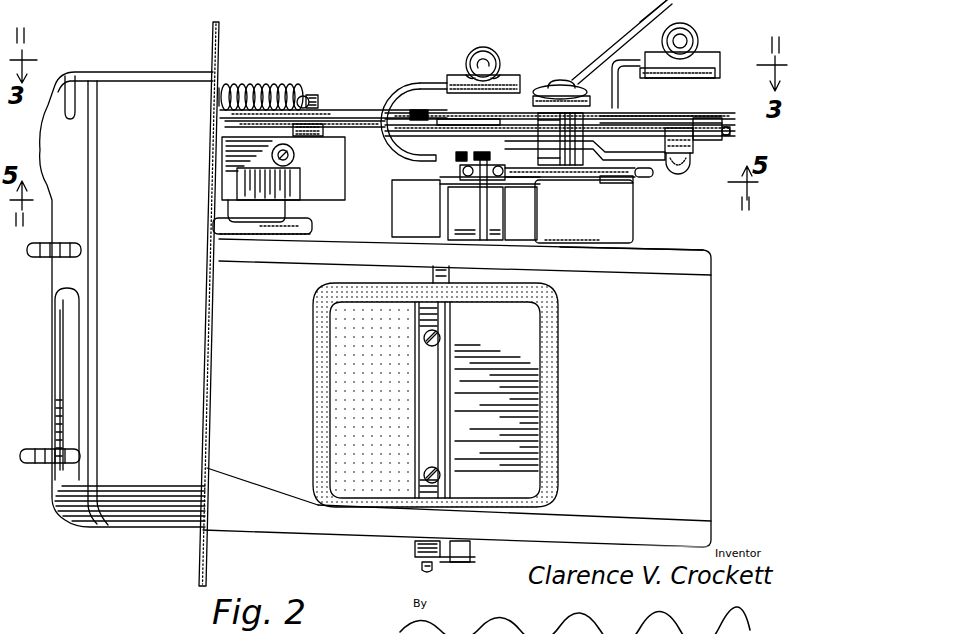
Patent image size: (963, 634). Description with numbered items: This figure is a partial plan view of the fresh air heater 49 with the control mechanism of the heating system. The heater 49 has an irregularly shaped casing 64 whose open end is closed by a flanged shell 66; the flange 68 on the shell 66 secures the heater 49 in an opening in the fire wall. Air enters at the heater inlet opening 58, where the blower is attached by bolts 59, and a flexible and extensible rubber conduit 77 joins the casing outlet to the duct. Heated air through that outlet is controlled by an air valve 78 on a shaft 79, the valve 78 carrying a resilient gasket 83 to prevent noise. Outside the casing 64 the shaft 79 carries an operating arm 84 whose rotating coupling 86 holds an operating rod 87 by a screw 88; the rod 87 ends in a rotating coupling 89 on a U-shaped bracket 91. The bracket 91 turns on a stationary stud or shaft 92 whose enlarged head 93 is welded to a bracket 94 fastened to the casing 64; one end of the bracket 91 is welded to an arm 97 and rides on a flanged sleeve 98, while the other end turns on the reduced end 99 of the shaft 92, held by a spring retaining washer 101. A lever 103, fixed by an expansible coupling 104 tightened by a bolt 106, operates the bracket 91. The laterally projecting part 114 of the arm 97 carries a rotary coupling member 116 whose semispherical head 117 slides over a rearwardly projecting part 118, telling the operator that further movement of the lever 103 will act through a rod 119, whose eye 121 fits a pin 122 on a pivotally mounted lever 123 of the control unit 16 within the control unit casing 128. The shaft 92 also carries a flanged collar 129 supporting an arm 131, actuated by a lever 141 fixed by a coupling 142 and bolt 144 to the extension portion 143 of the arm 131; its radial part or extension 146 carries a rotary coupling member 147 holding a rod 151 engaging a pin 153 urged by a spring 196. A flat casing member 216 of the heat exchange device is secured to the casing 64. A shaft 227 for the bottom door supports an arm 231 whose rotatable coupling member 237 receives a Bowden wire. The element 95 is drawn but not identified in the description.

The control unit 16 is at (314, 200).
The fresh air heater 49 is at (326, 547).
The heater inlet opening 58 is at (78, 325).
The bolts 59 is at (52, 252).
The casing 64 is at (257, 518).
The flanged shell 66 is at (116, 283).
The flange 68 is at (201, 556).
The flexible and extensible rubber conduit 77 is at (320, 343).
The air valve 78 is at (520, 412).
The shaft 79 is at (445, 272).
The gasket 83 is at (345, 392).
The operating arm 84 is at (403, 182).
The rotating coupling 86 is at (482, 200).
The operating rod 87 is at (470, 181).
The screw 88 is at (496, 166).
The rotating coupling 89 is at (466, 167).
The U-shaped bracket 91 is at (418, 84).
The stationary stud or shaft 92 is at (575, 90).
The enlarged head 93 is at (616, 178).
The bracket 94 is at (613, 227).
The top wall 95 is at (590, 250).
The arm 97 is at (523, 186).
The flanged sleeve 98 is at (573, 143).
The reduced end 99 is at (563, 80).
The spring retaining washer 101 is at (612, 82).
The lever 103 is at (618, 38).
The expansible coupling 104 is at (452, 75).
The bolt 106 is at (495, 62).
The laterally projecting part 114 is at (595, 144).
The rotary coupling member 116 is at (686, 147).
The semispherical head 117 is at (680, 174).
The rearwardly projecting part 118 is at (645, 177).
The rod 119 is at (515, 128).
The eye 121 is at (405, 128).
The pin 122 is at (418, 112).
The pivotally mounted lever 123 is at (295, 157).
The control unit casing 128 is at (302, 188).
The flanged collar 129 is at (556, 130).
The arm 131 is at (660, 116).
The lever 141 is at (662, 12).
The coupling 142 is at (710, 60).
The extension portion 143 is at (630, 78).
The bolt 144 is at (686, 42).
The radial part or extension 146 is at (728, 122).
The rotary coupling member 147 is at (710, 118).
The rod 151 is at (465, 119).
The pin 153 is at (313, 95).
The spring 196 is at (262, 85).
The casing member 216 is at (214, 222).
The shaft 227 is at (470, 545).
The arm 231 is at (421, 563).
The rotatable coupling member 237 is at (415, 548).